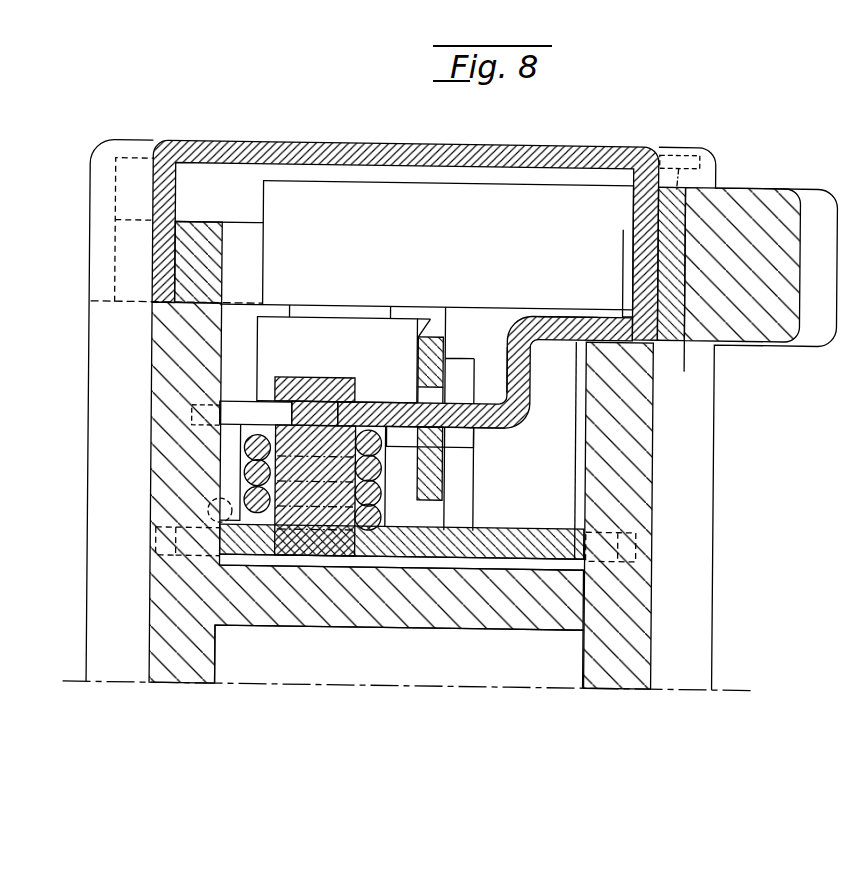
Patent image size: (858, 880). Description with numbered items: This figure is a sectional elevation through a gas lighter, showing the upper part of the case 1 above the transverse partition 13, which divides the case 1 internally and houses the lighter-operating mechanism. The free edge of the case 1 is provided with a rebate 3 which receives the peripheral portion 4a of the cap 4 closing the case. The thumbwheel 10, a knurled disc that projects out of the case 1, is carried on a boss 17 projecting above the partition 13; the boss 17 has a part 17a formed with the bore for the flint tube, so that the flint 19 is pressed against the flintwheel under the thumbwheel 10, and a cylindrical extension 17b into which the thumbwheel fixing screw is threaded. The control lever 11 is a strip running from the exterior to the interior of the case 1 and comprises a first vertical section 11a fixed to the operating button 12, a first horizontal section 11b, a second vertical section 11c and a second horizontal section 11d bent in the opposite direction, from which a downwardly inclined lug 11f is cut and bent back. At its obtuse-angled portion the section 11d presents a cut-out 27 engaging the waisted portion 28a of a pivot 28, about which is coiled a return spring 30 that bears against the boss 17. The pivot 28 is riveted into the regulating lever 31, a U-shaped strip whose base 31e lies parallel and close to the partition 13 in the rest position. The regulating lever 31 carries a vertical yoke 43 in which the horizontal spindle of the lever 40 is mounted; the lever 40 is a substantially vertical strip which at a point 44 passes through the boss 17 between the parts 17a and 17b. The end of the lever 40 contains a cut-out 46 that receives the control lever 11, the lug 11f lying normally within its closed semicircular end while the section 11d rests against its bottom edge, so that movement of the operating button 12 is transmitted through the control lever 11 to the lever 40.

The case 1 is at (178, 348).
The rebate 3 is at (155, 245).
The cap 4 is at (194, 136).
The peripheral portion of the cap 4a is at (104, 214).
The thumbwheel 10 is at (340, 210).
The control lever 11 is at (590, 309).
The first vertical section 11a is at (687, 146).
The first horizontal section 11b is at (540, 302).
The second vertical section 11c is at (518, 361).
The second horizontal section 11d is at (517, 419).
The lug 11f is at (460, 432).
The operating button 12 is at (752, 205).
The transverse partition 13 is at (400, 622).
The boss 17 is at (590, 492).
The part of the boss 17a is at (315, 372).
The cylindrical extension of the boss 17b is at (550, 464).
The flint 19 is at (342, 303).
The cut-out 27 is at (257, 409).
The pivot 28 is at (293, 489).
The waisted portion 28a is at (318, 409).
The return spring 30 is at (260, 439).
The regulating lever 31 is at (545, 519).
The base of the regulating lever 31e is at (538, 545).
The lever 40 is at (435, 322).
The yoke 43 is at (455, 499).
The point 44 is at (414, 304).
The cut-out 46 is at (432, 387).